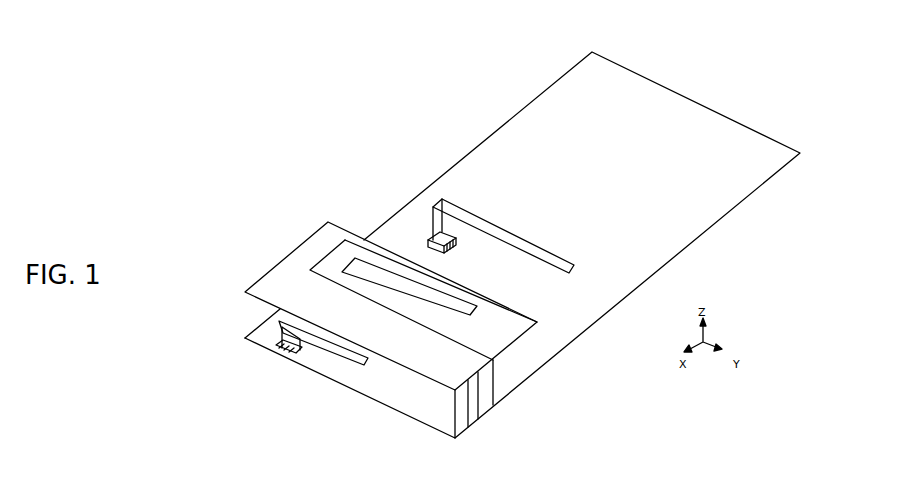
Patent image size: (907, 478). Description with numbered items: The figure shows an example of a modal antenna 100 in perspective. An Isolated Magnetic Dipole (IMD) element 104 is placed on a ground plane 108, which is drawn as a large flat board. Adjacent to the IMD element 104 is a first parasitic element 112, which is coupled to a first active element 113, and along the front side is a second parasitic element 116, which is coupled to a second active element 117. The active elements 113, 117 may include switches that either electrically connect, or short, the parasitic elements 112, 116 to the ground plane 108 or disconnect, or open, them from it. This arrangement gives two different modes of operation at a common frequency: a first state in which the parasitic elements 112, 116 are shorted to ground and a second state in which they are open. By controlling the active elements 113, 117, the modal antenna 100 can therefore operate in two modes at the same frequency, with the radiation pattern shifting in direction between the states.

The modal antenna 100 is at (270, 54).
The Isolated Magnetic Dipole element 104 is at (285, 288).
The ground plane 108 is at (677, 207).
The first parasitic element 112 is at (477, 214).
The first active element 113 is at (427, 228).
The second parasitic element 116 is at (337, 348).
The second active element 117 is at (280, 347).